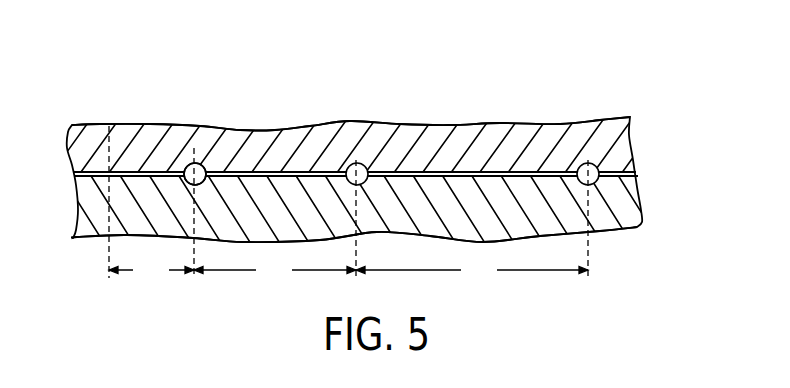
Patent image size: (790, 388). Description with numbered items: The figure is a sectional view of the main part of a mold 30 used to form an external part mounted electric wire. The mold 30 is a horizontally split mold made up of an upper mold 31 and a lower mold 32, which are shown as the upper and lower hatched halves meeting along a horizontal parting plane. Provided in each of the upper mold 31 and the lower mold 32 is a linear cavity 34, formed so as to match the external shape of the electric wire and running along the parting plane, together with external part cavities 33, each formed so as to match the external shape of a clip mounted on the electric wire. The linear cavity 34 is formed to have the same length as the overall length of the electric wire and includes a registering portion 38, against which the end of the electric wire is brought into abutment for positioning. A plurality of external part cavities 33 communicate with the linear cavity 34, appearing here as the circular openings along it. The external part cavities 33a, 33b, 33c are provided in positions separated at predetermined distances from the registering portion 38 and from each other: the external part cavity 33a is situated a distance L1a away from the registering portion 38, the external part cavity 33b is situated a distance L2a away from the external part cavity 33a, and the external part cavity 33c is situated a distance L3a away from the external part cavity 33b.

The mold 30 is at (652, 158).
The upper mold 31 is at (622, 134).
The lower mold 32 is at (635, 217).
The external part cavities 33 is at (209, 158).
The external part cavity 33a is at (185, 162).
The external part cavity 33b is at (348, 162).
The external part cavity 33c is at (578, 164).
The linear cavity 34 is at (442, 170).
The registering portion 38 is at (110, 172).
The distance L1a is at (151, 269).
The distance L2a is at (275, 269).
The distance L3a is at (472, 269).